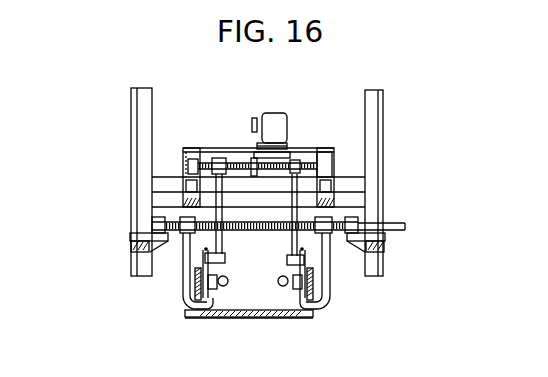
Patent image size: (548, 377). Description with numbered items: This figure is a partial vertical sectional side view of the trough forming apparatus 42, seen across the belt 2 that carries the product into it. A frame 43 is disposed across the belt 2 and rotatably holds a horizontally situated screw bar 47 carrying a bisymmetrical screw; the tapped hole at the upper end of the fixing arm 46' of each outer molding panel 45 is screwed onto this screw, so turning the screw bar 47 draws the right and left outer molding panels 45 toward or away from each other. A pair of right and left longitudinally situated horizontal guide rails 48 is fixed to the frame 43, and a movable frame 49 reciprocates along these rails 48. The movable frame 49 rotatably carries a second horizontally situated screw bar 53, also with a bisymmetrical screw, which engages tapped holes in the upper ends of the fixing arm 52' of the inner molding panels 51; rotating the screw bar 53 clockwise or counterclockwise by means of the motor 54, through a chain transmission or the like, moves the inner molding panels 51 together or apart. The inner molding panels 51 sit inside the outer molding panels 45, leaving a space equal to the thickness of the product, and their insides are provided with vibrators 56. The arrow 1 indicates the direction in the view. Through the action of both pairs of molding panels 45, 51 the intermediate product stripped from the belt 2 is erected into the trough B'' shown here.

The trough forming apparatus 42 is at (124, 115).
The frame 43 is at (366, 190).
The outer molding panel 45 is at (190, 296).
The fixing arm 46' is at (258, 271).
The screw bar 47 is at (406, 228).
The horizontal guide rail 48 is at (182, 184).
The movable frame 49 is at (327, 157).
The inner molding panel 51 is at (224, 312).
The fixing arm 52' is at (252, 150).
The screw bar 53 is at (277, 160).
The motor 54 is at (275, 122).
The vibrator 56 is at (228, 278).
The belt 2 is at (264, 318).
The feed direction arrow 1 is at (296, 326).
The trough B'' is at (270, 338).